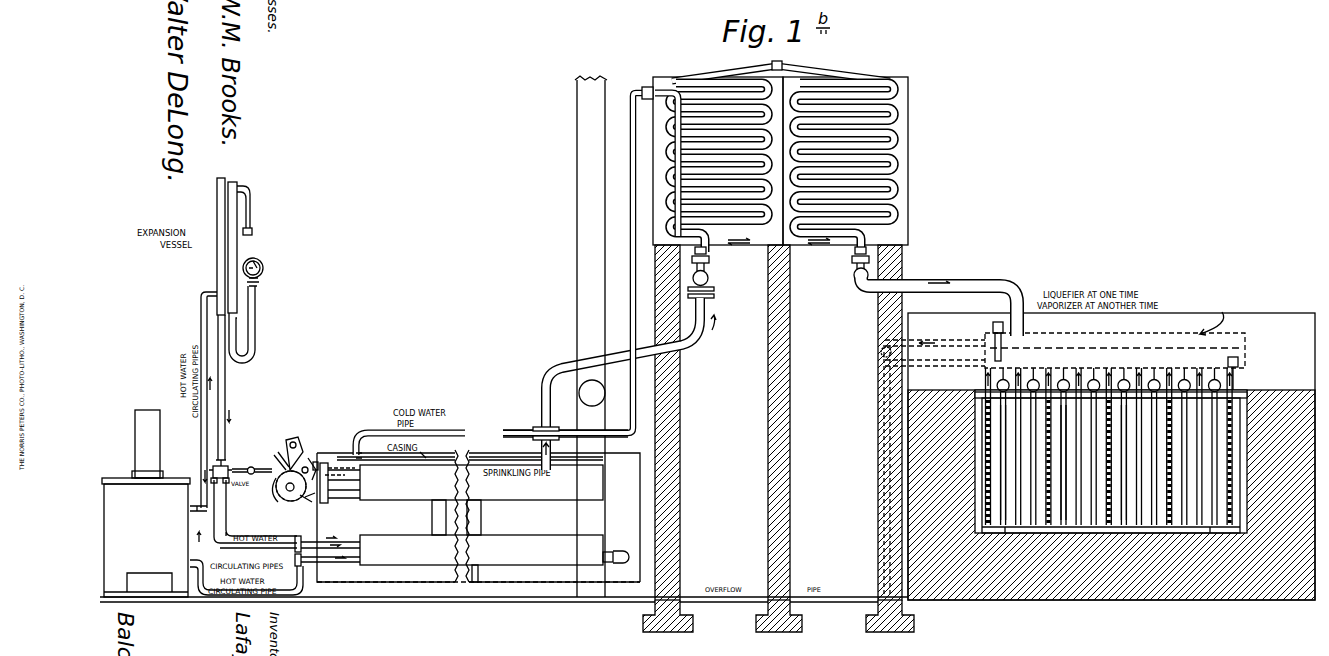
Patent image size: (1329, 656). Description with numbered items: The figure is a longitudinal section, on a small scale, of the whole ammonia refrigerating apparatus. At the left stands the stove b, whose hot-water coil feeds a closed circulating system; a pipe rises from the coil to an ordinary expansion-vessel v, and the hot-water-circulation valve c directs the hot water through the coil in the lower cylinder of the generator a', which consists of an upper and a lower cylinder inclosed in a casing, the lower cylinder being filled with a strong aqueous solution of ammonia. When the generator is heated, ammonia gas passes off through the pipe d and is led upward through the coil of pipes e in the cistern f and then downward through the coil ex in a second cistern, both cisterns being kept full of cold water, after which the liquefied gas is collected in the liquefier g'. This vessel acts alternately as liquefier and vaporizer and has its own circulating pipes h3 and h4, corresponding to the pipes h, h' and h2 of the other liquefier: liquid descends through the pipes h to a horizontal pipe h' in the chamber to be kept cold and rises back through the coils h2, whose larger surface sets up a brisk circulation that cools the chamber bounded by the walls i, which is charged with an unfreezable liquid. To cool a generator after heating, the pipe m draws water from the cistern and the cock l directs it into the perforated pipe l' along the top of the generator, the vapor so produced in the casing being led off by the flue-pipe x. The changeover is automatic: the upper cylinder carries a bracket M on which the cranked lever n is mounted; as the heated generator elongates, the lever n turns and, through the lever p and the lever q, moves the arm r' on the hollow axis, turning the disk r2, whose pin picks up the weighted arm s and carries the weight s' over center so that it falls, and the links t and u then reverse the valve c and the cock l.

The stove b is at (146, 503).
The expansion-vessel v is at (235, 270).
The hot-water-circulation valve c is at (223, 466).
The link t is at (252, 461).
The cranked lever n is at (295, 444).
The lever p is at (312, 458).
The lever q is at (278, 452).
The weight s' is at (301, 460).
The arm r' is at (266, 491).
The disk r2 is at (286, 490).
The bracket M is at (289, 500).
The arm s is at (307, 504).
The link u is at (342, 473).
The generator a' is at (474, 522).
The cock l is at (405, 436).
The perforated pipe l' is at (557, 435).
The pipe d is at (629, 384).
The flue-pipe x is at (591, 336).
The pipe m is at (578, 260).
The coil of pipes e is at (711, 167).
The cistern f is at (718, 161).
The coil of pipe ex is at (844, 167).
The liquefier g' is at (1068, 437).
The wall of the chamber i is at (898, 438).
The pipe h is at (1109, 446).
The horizontal pipe h' is at (1167, 462).
The coil of pipes h2 is at (1147, 465).
The pipe h3 is at (1100, 462).
The pipe h4 is at (1005, 533).